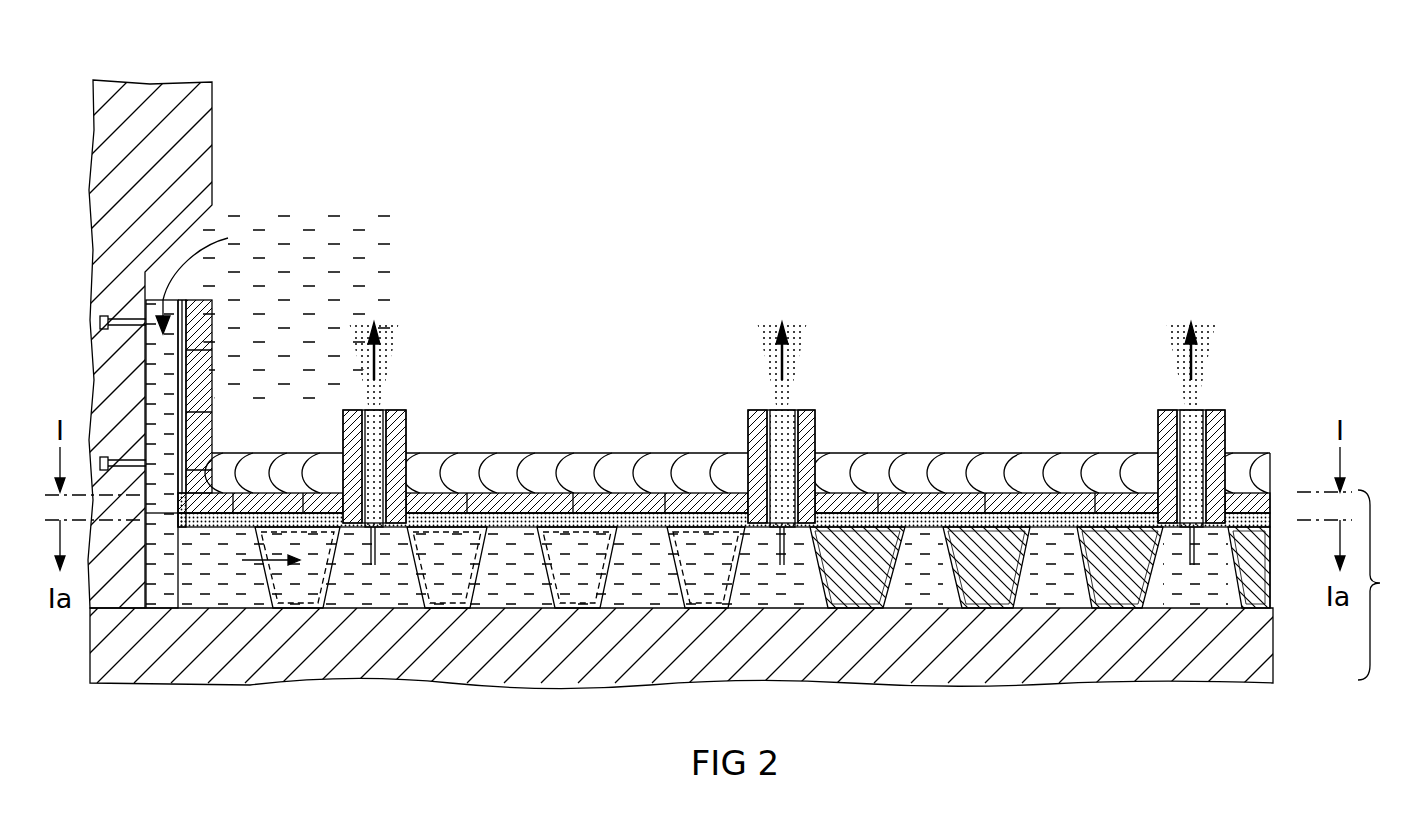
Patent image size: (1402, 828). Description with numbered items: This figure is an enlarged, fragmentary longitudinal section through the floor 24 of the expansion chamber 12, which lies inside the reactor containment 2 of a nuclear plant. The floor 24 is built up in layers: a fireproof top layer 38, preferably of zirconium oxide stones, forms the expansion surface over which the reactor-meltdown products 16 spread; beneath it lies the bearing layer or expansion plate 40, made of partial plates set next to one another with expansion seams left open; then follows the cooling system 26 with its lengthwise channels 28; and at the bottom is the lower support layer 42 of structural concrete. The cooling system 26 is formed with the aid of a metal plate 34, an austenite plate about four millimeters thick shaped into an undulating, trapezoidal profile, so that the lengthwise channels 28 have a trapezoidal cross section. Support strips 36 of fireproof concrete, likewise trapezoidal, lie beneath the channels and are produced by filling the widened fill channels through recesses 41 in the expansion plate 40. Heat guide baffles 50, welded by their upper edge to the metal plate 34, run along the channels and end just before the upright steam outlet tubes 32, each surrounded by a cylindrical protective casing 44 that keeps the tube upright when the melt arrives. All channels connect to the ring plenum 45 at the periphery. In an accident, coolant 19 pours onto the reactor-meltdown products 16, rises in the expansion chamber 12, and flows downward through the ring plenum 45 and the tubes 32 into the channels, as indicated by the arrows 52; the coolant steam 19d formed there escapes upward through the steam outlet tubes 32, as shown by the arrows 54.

The reactor containment 2 is at (148, 162).
The expansion chamber 12 is at (672, 207).
The reactor-meltdown products 16 is at (277, 463).
The coolant 19 is at (297, 268).
The coolant steam 19d is at (638, 525).
The floor 24 is at (1378, 595).
The cooling system 26 is at (1298, 590).
The lengthwise channels 28 is at (923, 585).
The steam outlet tubes 32 is at (397, 455).
The metal plate 34 is at (553, 520).
The support strips 36 is at (860, 590).
The top layer 38 is at (200, 323).
The expansion plate 40 is at (1268, 520).
The recesses 41 is at (1110, 540).
The lower support layer 42 is at (1235, 640).
The protective casing 44 is at (402, 425).
The ring plenum 45 is at (158, 365).
The heat guide baffles 50 is at (372, 555).
The arrows 52 is at (190, 270).
The arrows 54 is at (380, 365).